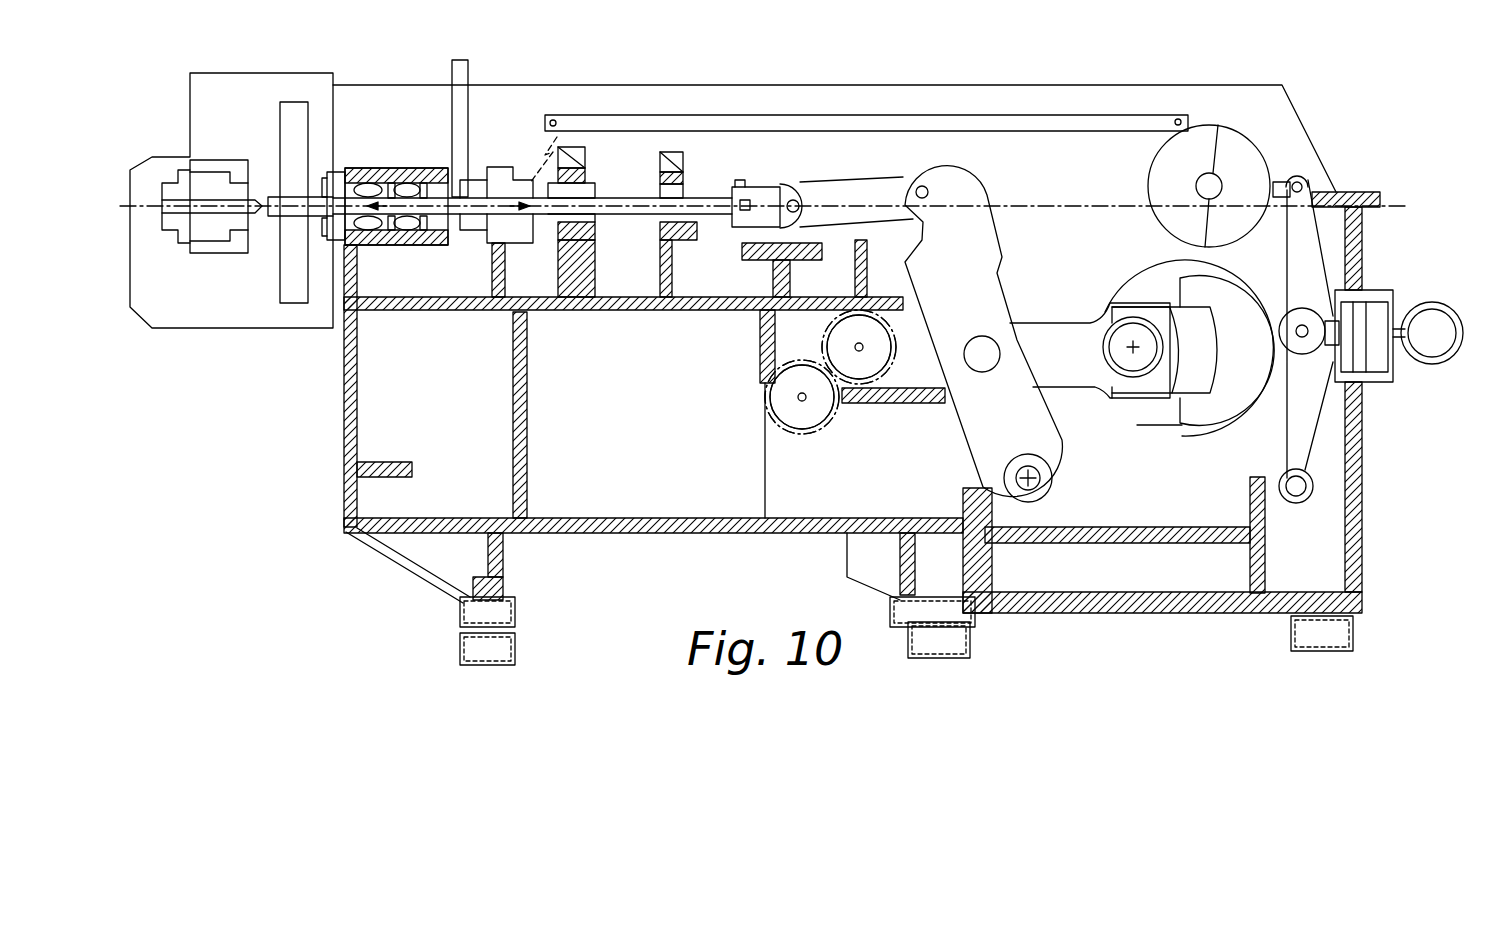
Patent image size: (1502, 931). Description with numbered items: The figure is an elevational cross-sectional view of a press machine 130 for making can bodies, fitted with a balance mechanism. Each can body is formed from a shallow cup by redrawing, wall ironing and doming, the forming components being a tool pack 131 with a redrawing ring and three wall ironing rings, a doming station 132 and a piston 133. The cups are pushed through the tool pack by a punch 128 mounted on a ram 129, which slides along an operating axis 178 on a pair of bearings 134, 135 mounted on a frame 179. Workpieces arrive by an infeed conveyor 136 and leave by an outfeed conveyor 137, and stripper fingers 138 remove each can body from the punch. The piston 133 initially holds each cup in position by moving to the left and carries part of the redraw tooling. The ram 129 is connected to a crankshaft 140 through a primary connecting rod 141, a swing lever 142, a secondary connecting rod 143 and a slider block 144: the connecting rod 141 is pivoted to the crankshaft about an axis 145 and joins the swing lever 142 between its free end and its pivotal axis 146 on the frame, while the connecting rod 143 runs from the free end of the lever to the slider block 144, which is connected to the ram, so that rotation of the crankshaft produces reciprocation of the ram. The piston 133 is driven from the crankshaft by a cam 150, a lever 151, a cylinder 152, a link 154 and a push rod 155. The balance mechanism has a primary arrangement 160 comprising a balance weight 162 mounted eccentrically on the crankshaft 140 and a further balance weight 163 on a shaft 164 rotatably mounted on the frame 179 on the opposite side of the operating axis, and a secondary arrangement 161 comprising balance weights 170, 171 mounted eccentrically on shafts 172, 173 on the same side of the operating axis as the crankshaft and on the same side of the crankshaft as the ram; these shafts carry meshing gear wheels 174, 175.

The punch 128 is at (272, 213).
The ram 129 is at (633, 214).
The press machine 130 is at (296, 458).
The tool pack 131 is at (402, 236).
The doming station 132 is at (202, 243).
The piston 133 is at (515, 238).
The bearing 134 is at (588, 173).
The bearing 135 is at (692, 176).
The infeed conveyor 136 is at (452, 127).
The outfeed conveyor 137 is at (288, 138).
The stripper fingers 138 is at (333, 242).
The crankshaft 140 is at (1178, 362).
The primary connecting rod 141 is at (1060, 323).
The swing lever 142 is at (968, 192).
The secondary connecting rod 143 is at (850, 188).
The slider block 144 is at (765, 198).
The axis 145 is at (1130, 348).
The pivotal axis 146 is at (1040, 478).
The cam 150 is at (1238, 417).
The lever 151 is at (1302, 460).
The cylinder 152 is at (1373, 362).
The link 154 is at (1285, 180).
The push rod 155 is at (995, 118).
The primary arrangement 160 is at (1130, 242).
The secondary arrangement 161 is at (672, 445).
The balance weight 162 is at (1238, 297).
The further balance weight 163 is at (1228, 145).
The shaft 164 is at (1202, 182).
The balance weight 170 is at (822, 407).
The balance weight 171 is at (877, 357).
The shaft 172 is at (800, 398).
The shaft 173 is at (855, 347).
The gear wheel 174 is at (798, 433).
The gear wheel 175 is at (895, 332).
The operating axis 178 is at (1388, 208).
The frame 179 is at (633, 303).